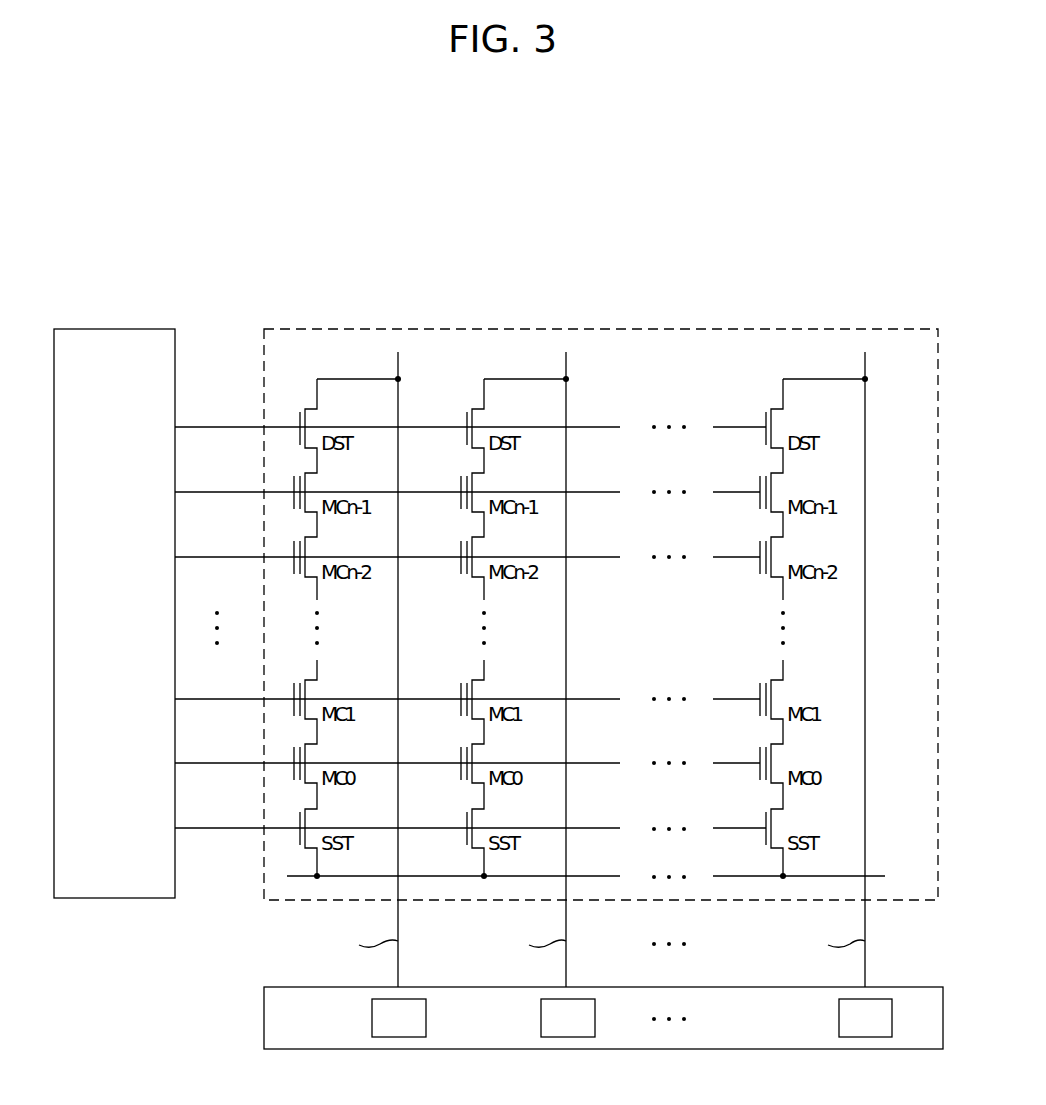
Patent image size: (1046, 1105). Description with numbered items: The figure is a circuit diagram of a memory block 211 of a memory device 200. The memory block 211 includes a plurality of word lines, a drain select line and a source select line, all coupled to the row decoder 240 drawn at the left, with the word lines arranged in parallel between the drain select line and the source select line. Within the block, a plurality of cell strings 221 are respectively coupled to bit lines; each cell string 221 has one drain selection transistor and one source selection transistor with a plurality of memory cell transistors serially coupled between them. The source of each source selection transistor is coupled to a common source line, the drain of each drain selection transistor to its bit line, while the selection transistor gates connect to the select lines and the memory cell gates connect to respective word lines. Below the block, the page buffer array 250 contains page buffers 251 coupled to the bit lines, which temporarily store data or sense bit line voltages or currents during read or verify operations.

The memory device 200 is at (913, 231).
The memory block 211 is at (828, 329).
The cell string 221 is at (296, 368).
The row decoder 240 is at (117, 329).
The page buffer array 250 is at (264, 1016).
The page buffer 251 is at (372, 1016).